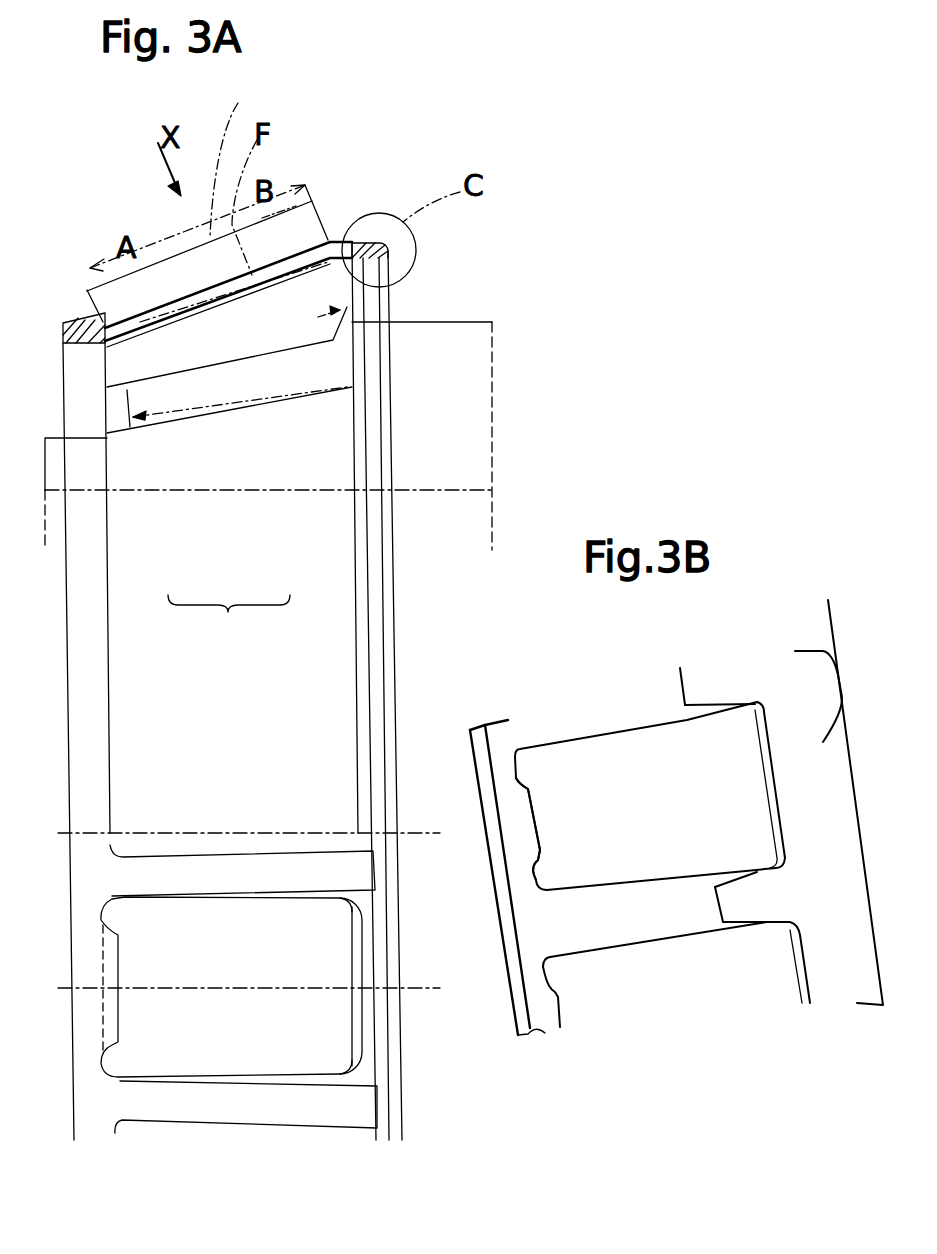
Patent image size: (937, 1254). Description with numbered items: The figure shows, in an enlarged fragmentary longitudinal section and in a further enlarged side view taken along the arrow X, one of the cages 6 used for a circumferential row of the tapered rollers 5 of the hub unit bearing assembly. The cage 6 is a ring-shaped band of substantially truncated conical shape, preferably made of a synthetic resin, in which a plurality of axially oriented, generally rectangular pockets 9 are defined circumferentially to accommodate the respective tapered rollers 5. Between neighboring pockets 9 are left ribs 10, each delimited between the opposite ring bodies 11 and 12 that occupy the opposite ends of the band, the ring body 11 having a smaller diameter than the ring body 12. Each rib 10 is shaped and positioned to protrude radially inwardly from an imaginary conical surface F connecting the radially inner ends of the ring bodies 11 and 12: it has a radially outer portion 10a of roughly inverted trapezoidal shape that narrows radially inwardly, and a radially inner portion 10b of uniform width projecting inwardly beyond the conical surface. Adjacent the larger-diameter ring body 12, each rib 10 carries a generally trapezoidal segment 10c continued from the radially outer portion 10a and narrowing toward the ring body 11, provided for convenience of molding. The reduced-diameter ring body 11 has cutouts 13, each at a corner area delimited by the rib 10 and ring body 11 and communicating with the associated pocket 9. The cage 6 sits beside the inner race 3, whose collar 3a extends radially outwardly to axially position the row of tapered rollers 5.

In FIG. 3A, the inner race 3 is at (470, 452).
In FIG. 3A, the collar 3a is at (431, 336).
In FIG. 3A, the tapered rollers 5 is at (233, 157).
In FIG. 3A, the cage 6 is at (62, 637).
In FIG. 3B, the cage 6 is at (500, 733).
In FIG. 3A, the pockets 9 is at (105, 332).
In FIG. 3B, the pockets 9 is at (577, 753).
In FIG. 3A, the ribs 10 is at (229, 627).
In FIG. 3B, the ribs 10 is at (652, 705).
In FIG. 3A, the radially outer portion 10a is at (187, 305).
In FIG. 3A, the radially inner portion 10b is at (243, 340).
In FIG. 3B, the trapezoidal segment 10c is at (752, 900).
In FIG. 3A, the ring body 11 is at (68, 322).
In FIG. 3B, the ring body 11 is at (517, 845).
In FIG. 3A, the ring body 12 is at (362, 236).
In FIG. 3B, the ring body 12 is at (839, 783).
In FIG. 3A, the cutouts 13 is at (112, 1060).
In FIG. 3B, the cutouts 13 is at (535, 872).